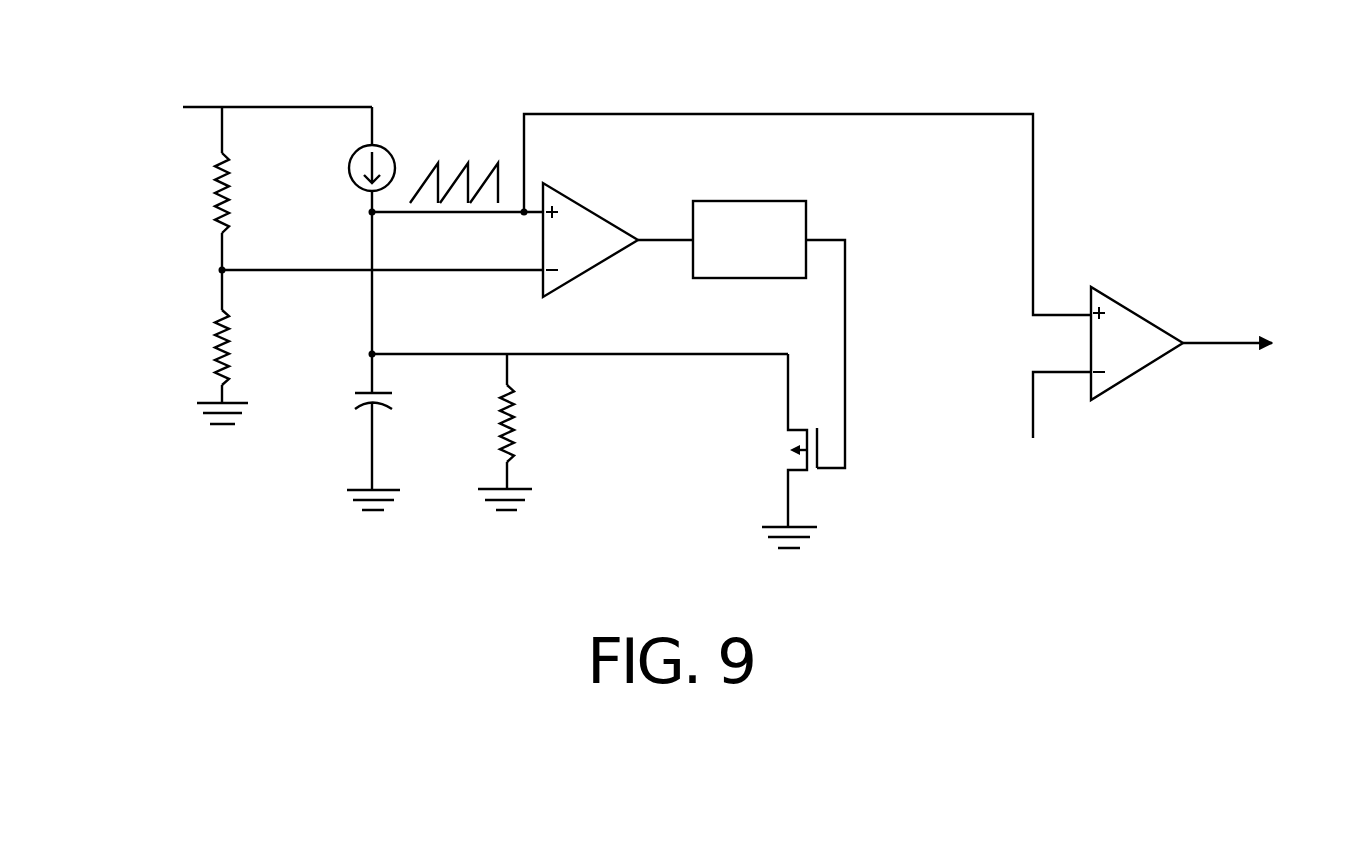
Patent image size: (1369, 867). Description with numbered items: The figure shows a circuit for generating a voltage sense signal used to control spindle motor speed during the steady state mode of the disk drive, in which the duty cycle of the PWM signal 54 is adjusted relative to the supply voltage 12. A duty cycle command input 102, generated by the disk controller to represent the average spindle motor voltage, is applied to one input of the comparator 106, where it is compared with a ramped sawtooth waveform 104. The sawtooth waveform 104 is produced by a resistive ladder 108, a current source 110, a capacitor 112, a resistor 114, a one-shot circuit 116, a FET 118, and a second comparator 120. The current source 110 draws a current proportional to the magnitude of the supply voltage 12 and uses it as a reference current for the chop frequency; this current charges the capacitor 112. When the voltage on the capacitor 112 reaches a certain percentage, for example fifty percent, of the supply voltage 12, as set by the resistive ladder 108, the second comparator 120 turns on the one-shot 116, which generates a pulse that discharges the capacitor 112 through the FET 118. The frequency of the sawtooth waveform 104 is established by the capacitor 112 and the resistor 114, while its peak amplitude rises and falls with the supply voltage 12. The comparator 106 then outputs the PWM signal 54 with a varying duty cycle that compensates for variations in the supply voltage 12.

The supply voltage 12 is at (183, 107).
The resistive ladder 108 is at (212, 153).
The current source 110 is at (349, 168).
The capacitor 112 is at (340, 397).
The resistor 114 is at (527, 425).
The one-shot circuit 116 is at (748, 201).
The FET 118 is at (778, 445).
The second comparator 120 is at (577, 196).
The ramped sawtooth waveform 104 is at (1033, 197).
The comparator 106 is at (1130, 307).
The PWM signal 54 is at (1220, 348).
The duty cycle command input 102 is at (1033, 400).